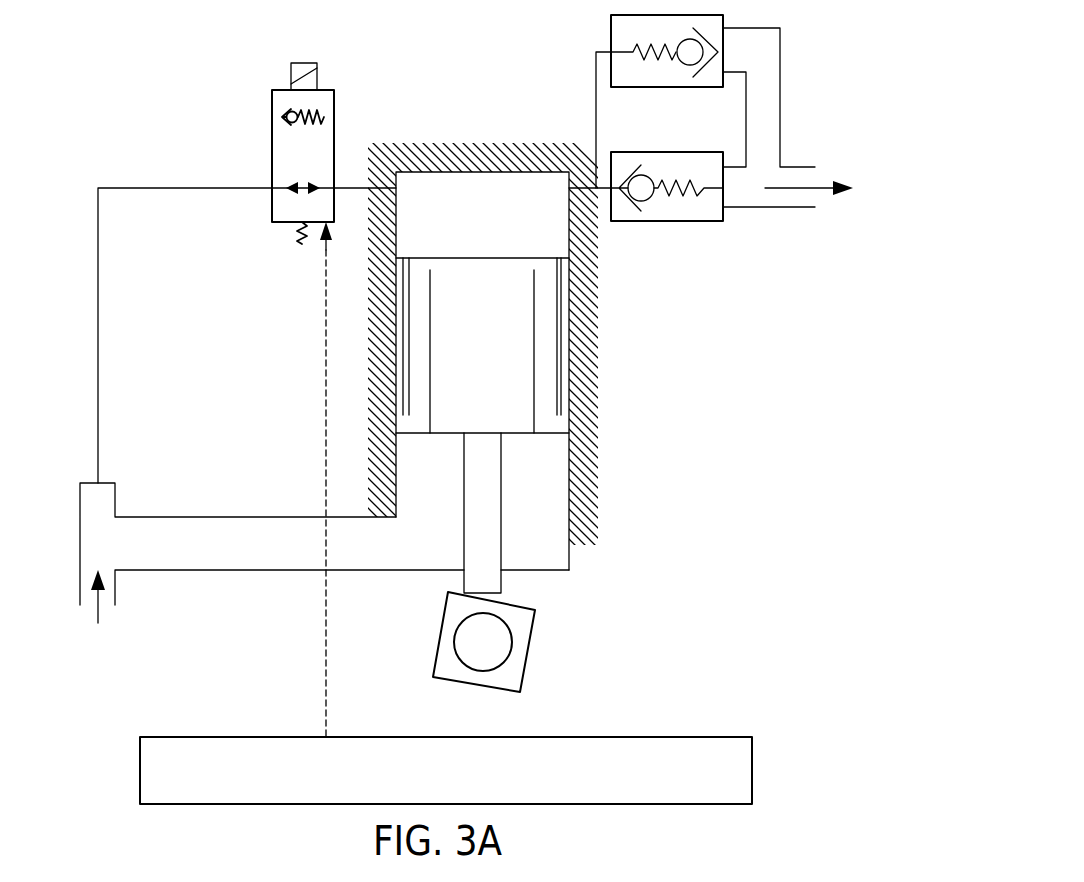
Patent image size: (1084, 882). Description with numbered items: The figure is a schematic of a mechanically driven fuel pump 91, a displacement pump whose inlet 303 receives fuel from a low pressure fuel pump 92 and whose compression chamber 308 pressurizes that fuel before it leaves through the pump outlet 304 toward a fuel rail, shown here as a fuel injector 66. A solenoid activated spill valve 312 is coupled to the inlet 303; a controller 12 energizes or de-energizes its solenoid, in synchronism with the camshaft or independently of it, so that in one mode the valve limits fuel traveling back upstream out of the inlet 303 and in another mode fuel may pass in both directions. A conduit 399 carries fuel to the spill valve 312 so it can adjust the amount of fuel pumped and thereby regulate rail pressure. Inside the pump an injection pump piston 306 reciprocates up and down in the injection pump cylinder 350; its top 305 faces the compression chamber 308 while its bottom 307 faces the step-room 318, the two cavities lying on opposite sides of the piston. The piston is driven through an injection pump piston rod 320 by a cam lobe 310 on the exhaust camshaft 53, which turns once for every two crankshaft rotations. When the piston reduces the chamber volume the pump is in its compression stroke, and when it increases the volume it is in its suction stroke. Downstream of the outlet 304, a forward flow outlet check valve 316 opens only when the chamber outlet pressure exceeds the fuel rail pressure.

The mechanically driven fuel pump 91 is at (232, 128).
The solenoid activated spill valve 312 is at (291, 63).
The inlet 303 is at (352, 188).
The compression chamber 308 is at (447, 205).
The pump outlet 304 is at (578, 182).
The forward flow outlet check valve 316 is at (657, 152).
The top 305 is at (510, 257).
The injection pump piston 306 is at (543, 355).
The injection pump cylinder 350 is at (570, 348).
The bottom 307 is at (545, 433).
The step-room 318 is at (545, 555).
The injection pump piston rod 320 is at (500, 573).
The cam lobe 310 is at (535, 610).
The exhaust camshaft 53 is at (487, 648).
The conduit 399 is at (118, 483).
The low pressure fuel pump 92 is at (97, 671).
The fuel injector 66 is at (837, 190).
The controller 12 is at (446, 770).